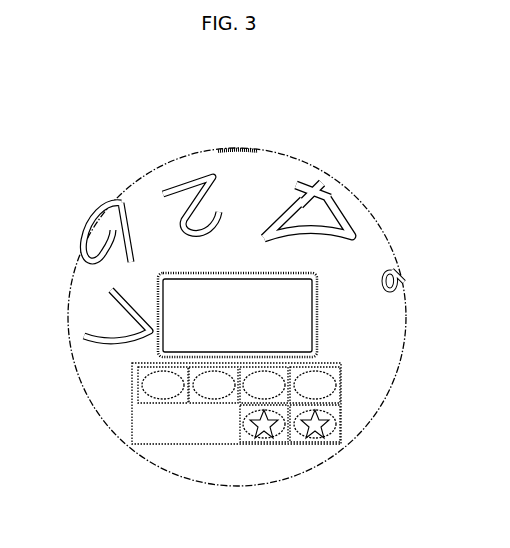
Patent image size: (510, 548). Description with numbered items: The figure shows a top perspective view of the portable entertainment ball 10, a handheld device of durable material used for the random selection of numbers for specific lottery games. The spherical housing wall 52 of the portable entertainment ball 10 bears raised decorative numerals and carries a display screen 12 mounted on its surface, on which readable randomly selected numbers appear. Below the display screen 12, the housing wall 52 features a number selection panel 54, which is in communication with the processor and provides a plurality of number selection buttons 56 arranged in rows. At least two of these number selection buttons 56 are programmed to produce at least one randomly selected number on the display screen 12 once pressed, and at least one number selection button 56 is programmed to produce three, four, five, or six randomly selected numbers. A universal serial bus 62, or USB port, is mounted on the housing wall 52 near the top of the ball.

The portable entertainment ball 10 is at (392, 227).
The display screen 12 is at (318, 311).
The housing wall 52 is at (75, 282).
The number selection panel 54 is at (133, 382).
The number selection buttons 56 is at (165, 404).
The universal serial bus 62 is at (238, 151).